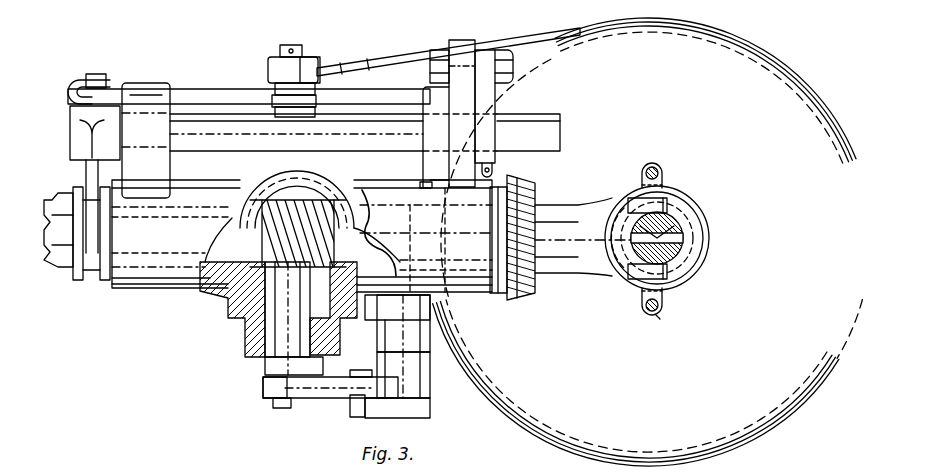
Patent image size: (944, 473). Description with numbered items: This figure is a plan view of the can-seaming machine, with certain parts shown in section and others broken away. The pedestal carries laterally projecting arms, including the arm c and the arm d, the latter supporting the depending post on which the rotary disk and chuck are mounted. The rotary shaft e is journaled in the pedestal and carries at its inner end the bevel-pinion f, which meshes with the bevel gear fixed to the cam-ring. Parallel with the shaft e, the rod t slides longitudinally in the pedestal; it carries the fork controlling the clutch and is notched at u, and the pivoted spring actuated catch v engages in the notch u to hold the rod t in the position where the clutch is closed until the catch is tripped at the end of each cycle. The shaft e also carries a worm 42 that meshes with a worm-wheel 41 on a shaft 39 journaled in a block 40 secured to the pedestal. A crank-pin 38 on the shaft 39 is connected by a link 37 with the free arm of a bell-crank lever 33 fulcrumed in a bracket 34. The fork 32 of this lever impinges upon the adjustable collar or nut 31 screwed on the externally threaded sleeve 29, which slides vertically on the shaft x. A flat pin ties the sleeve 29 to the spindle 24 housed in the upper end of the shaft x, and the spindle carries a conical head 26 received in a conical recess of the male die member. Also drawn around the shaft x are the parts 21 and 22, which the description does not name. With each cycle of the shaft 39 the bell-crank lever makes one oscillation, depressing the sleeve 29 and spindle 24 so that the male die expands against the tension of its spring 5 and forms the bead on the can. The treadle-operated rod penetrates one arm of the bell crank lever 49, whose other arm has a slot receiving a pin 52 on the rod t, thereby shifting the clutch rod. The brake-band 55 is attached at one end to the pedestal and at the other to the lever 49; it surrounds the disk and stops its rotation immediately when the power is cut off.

The spring 5 is at (90, 183).
The lug 21 is at (668, 306).
The lug bolt 22 is at (660, 319).
The spindle 24 is at (666, 228).
The conical head 26 is at (640, 250).
The sleeve 29 is at (680, 230).
The adjustable collar or nut 31 is at (692, 233).
The fork 32 is at (640, 282).
The bell-crank lever 33 is at (430, 383).
The bracket 34 is at (430, 348).
The link 37 is at (340, 385).
The crank-pin 38 is at (283, 408).
The shaft 39 is at (258, 360).
The block 40 is at (232, 338).
The worm-wheel 41 is at (366, 196).
The worm 42 is at (244, 290).
The bell crank lever 49 is at (200, 100).
The pin 52 is at (333, 70).
The brake-band 55 is at (762, 434).
The laterally projecting arm C is at (700, 250).
The laterally projecting arm d is at (153, 286).
The rotary shaft e is at (570, 262).
The bevel-pinion f is at (531, 193).
The rod t is at (376, 125).
The notch u is at (476, 114).
The pivoted spring actuated catch v is at (500, 174).
The shaft x is at (672, 255).